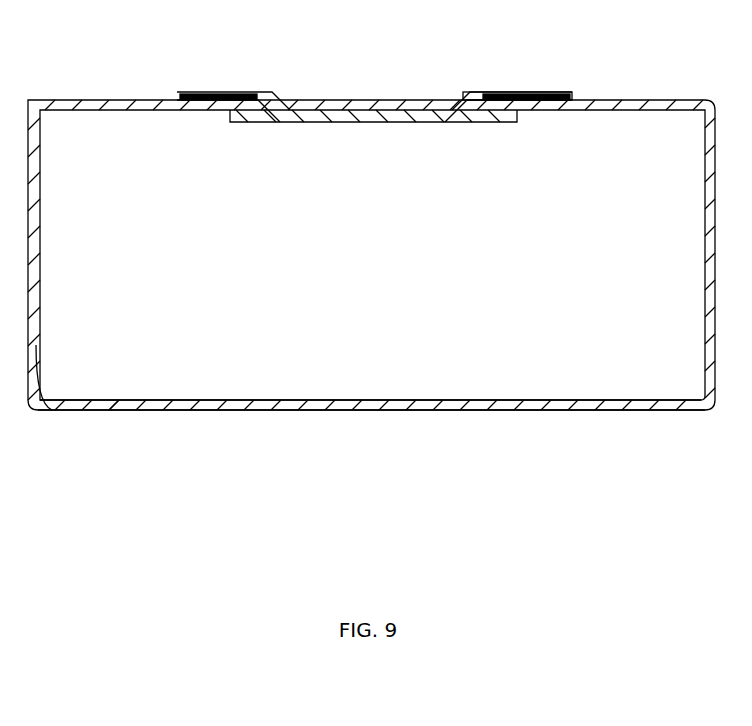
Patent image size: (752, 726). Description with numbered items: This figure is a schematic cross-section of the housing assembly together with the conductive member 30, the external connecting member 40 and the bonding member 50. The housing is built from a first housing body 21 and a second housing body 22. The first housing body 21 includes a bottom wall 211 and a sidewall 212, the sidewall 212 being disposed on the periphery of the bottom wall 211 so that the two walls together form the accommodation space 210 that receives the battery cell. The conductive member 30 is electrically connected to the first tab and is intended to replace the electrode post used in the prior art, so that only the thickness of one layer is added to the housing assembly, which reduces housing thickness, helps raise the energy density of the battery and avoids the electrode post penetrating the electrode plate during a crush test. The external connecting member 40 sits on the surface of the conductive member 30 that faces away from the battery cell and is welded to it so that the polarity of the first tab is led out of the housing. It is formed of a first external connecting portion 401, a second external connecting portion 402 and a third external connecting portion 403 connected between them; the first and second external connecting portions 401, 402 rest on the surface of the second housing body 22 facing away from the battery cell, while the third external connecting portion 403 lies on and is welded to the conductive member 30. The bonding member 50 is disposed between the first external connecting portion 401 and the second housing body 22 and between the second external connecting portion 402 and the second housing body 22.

The second housing body 22 is at (637, 100).
The first housing body 21 is at (138, 468).
The accommodation space 210 is at (433, 384).
The bottom wall 211 is at (122, 410).
The sidewall 212 is at (52, 410).
The external connecting member 40 is at (374, 64).
The first external connecting portion 401 is at (256, 90).
The second external connecting portion 402 is at (495, 89).
The third external connecting portion 403 is at (343, 106).
The conductive member 30 is at (493, 97).
The bonding member 50 is at (215, 96).